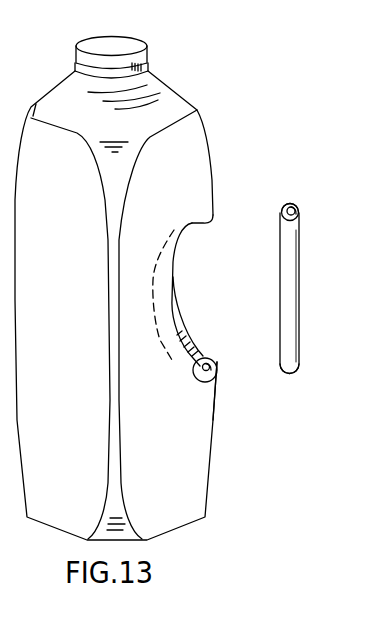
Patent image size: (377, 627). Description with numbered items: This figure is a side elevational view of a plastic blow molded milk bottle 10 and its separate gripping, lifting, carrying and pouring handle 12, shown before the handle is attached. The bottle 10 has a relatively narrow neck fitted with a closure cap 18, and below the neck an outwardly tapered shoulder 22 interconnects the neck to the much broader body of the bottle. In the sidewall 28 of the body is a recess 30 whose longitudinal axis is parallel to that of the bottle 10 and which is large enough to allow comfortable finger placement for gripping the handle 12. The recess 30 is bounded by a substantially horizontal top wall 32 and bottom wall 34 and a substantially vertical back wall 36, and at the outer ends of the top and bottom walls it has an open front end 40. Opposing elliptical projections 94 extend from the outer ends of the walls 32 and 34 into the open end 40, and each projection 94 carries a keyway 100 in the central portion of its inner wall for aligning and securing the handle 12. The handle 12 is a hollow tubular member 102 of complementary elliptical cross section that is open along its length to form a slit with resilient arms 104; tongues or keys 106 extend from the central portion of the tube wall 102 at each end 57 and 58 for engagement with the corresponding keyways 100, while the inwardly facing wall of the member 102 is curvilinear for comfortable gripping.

The bottle 10 is at (43, 190).
The handle 12 is at (300, 270).
The closure cap 18 is at (72, 69).
The shoulder 22 is at (168, 85).
The sidewall 28 is at (216, 418).
The recess 30 is at (178, 276).
The top wall 32 is at (206, 223).
The bottom wall 34 is at (192, 350).
The back wall 36 is at (152, 295).
The open front end 40 is at (206, 290).
The end of handle 57 is at (291, 205).
The end of handle 58 is at (292, 376).
The elliptical projection 94 is at (218, 215).
The keyway 100 is at (196, 388).
The hollow tubular member 102 is at (284, 273).
The resilient arm 104 is at (296, 230).
The key 106 is at (288, 208).